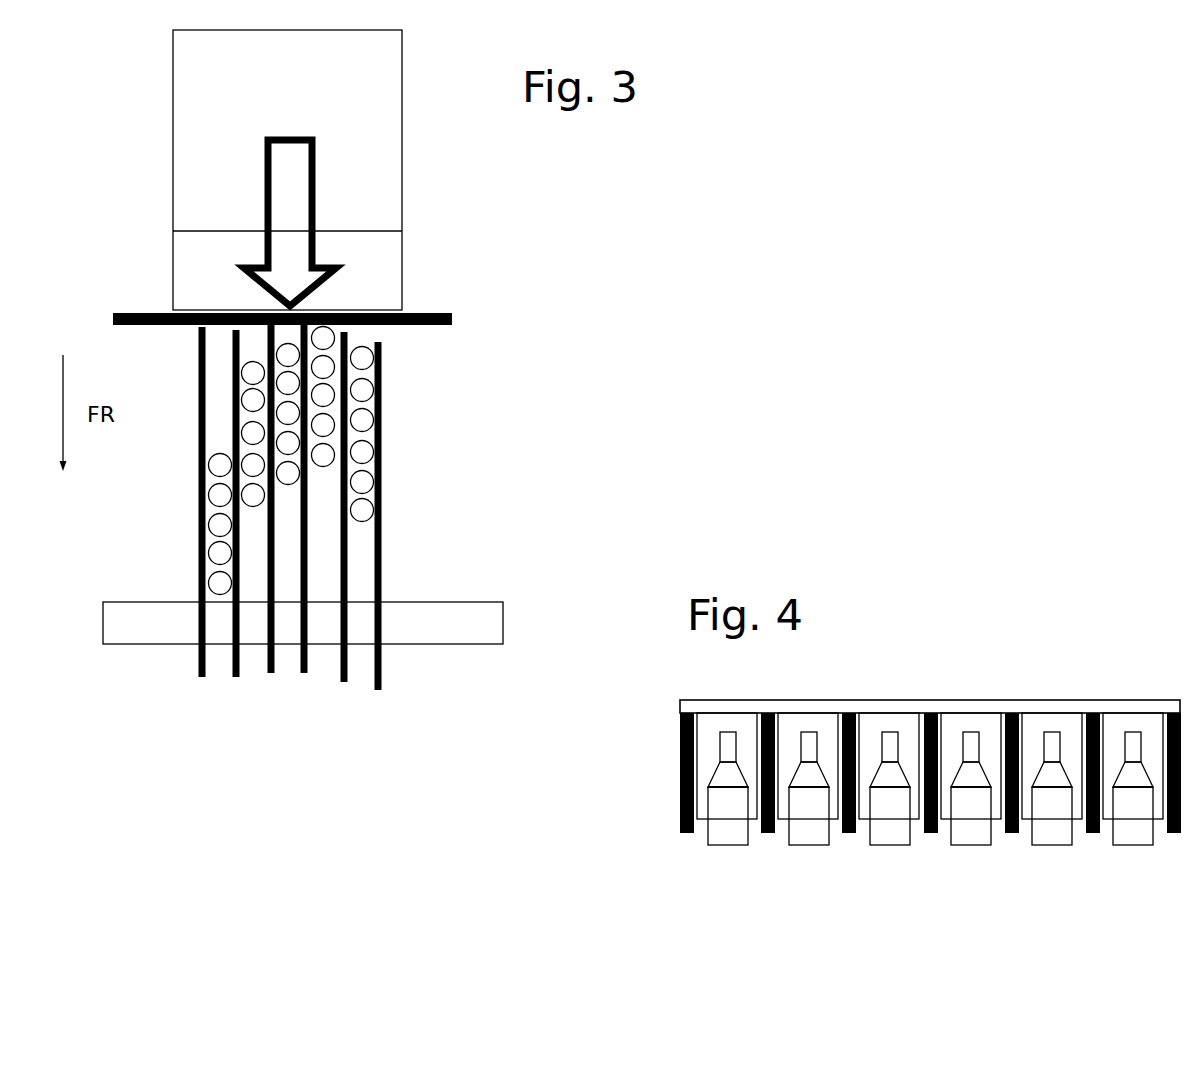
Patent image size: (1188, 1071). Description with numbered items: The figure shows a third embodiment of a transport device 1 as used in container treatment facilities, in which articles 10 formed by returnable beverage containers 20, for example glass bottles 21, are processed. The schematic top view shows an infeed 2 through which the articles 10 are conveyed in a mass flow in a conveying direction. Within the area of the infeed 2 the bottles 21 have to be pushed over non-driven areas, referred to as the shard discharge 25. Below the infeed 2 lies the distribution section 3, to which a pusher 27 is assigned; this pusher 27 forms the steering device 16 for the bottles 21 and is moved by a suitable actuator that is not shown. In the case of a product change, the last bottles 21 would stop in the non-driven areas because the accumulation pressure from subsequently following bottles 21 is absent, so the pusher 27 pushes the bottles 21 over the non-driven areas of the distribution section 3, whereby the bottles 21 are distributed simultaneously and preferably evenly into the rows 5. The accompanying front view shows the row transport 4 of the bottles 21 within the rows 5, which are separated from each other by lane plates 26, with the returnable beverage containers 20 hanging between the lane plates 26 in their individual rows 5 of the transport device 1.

In FIG. 3, the transport device 1 is at (258, 752).
In FIG. 4, the transport device 1 is at (953, 882).
In FIG. 3, the infeed 2 is at (386, 77).
In FIG. 3, the distribution section 3 is at (383, 266).
In FIG. 3, the row transport 4 is at (335, 507).
In FIG. 4, the row transport 4 is at (930, 728).
In FIG. 3, the rows 5 is at (381, 375).
In FIG. 4, the rows 5 is at (1068, 733).
In FIG. 3, the articles 10 is at (357, 461).
In FIG. 4, the articles 10 is at (894, 841).
In FIG. 3, the steering device 16 is at (452, 316).
In FIG. 3, the returnable beverage containers 20 is at (357, 461).
In FIG. 4, the returnable beverage containers 20 is at (894, 841).
In FIG. 3, the glass bottles 21 is at (356, 497).
In FIG. 4, the glass bottles 21 is at (732, 807).
In FIG. 3, the shard discharge 25 is at (503, 620).
In FIG. 4, the lane plates 26 is at (1018, 713).
In FIG. 3, the pusher 27 is at (338, 279).